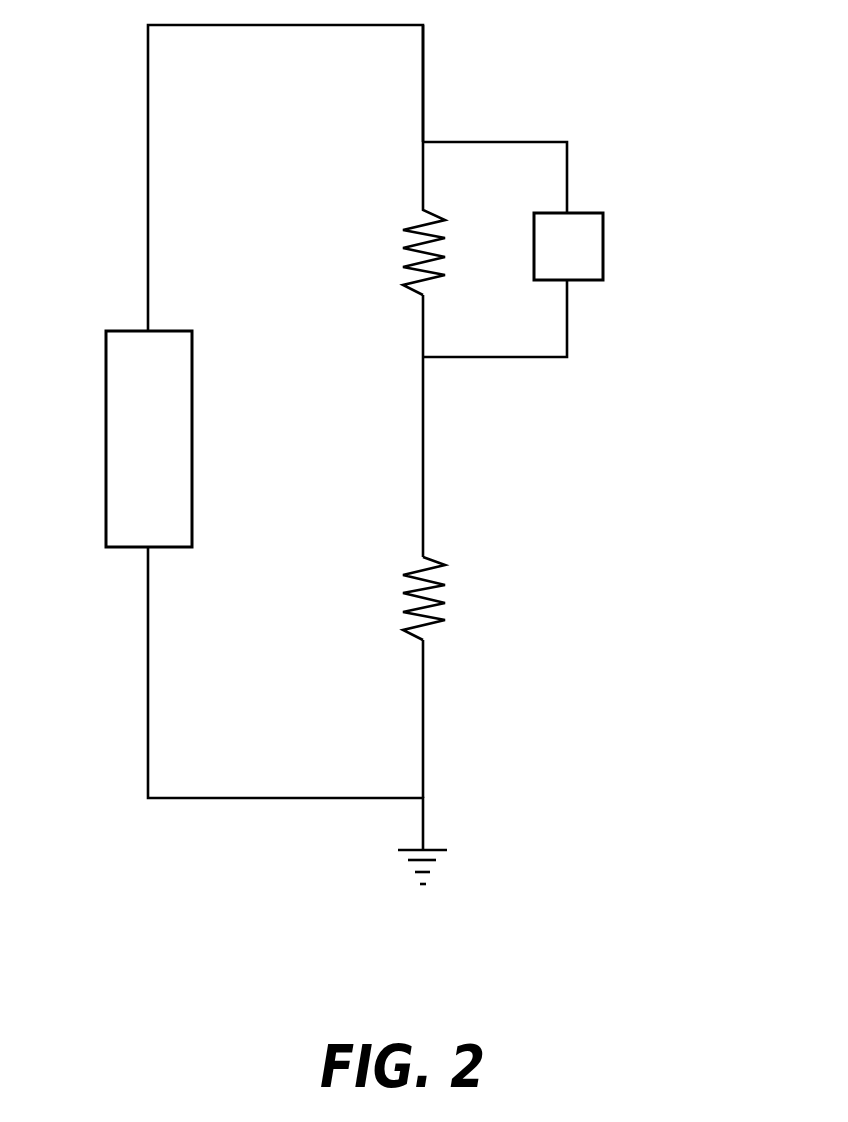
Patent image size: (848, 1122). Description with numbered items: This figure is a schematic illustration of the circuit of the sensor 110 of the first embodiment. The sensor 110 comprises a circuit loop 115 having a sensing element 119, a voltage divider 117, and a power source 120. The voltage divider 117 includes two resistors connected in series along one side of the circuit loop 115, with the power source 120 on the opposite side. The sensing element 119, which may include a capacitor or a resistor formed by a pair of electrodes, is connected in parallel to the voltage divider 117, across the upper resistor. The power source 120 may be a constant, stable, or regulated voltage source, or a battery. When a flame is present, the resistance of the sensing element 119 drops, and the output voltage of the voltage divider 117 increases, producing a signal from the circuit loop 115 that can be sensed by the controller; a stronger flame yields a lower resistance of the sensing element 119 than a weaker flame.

The sensor 110 is at (612, 817).
The circuit loop 115 is at (423, 78).
The voltage divider 117 is at (428, 419).
The sensing element 119 is at (603, 241).
The power source 120 is at (106, 455).